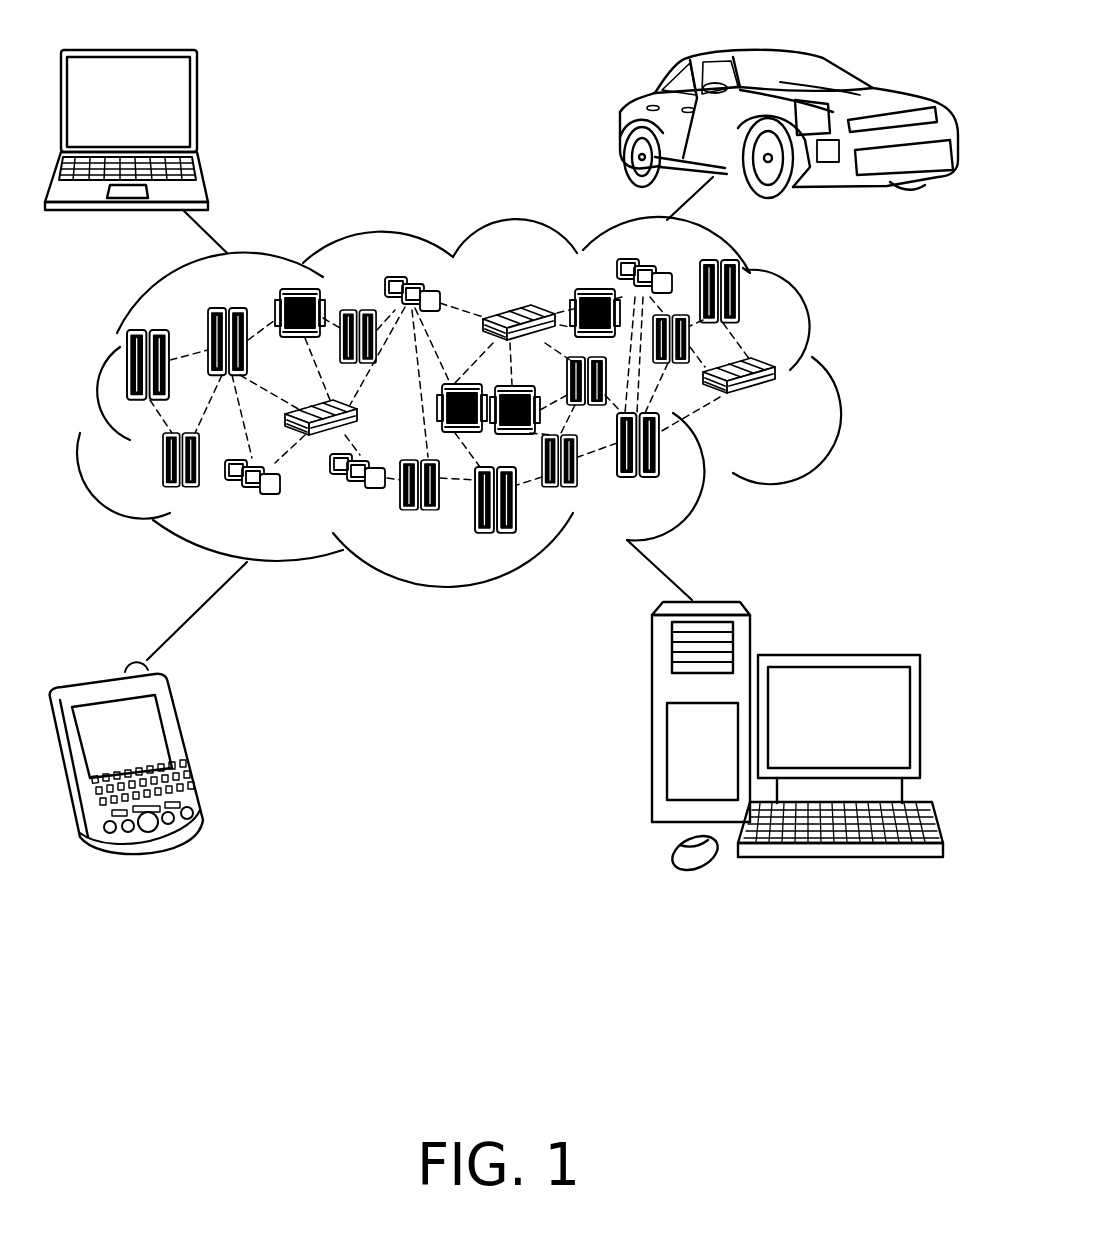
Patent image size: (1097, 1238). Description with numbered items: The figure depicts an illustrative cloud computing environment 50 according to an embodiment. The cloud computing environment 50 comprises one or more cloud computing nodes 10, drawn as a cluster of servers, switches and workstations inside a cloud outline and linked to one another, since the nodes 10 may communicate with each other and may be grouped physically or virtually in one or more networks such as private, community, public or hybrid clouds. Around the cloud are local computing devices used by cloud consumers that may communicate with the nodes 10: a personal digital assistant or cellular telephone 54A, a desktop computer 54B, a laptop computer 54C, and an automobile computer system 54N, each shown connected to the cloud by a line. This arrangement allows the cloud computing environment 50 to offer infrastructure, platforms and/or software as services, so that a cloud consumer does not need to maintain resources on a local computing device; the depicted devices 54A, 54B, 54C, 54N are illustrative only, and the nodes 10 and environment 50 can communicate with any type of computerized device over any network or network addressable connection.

The cloud computing nodes 10 is at (780, 404).
The cloud computing environment 50 is at (838, 373).
The personal digital assistant or cellular telephone 54A is at (187, 747).
The desktop computer 54B is at (837, 652).
The laptop computer 54C is at (197, 110).
The automobile computer system 54N is at (624, 128).